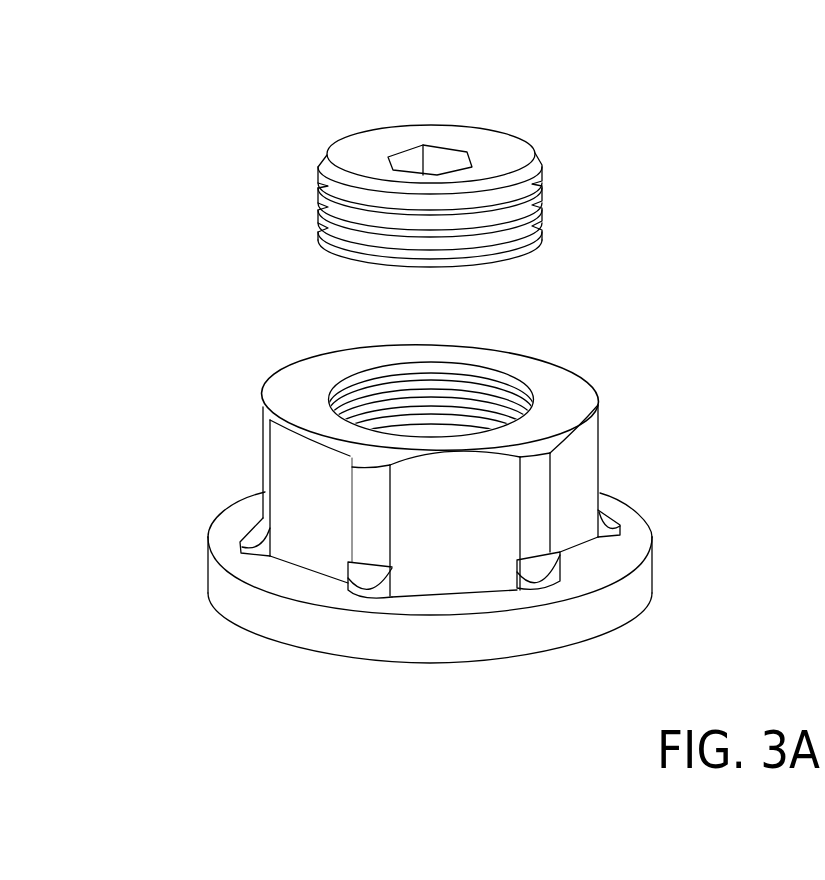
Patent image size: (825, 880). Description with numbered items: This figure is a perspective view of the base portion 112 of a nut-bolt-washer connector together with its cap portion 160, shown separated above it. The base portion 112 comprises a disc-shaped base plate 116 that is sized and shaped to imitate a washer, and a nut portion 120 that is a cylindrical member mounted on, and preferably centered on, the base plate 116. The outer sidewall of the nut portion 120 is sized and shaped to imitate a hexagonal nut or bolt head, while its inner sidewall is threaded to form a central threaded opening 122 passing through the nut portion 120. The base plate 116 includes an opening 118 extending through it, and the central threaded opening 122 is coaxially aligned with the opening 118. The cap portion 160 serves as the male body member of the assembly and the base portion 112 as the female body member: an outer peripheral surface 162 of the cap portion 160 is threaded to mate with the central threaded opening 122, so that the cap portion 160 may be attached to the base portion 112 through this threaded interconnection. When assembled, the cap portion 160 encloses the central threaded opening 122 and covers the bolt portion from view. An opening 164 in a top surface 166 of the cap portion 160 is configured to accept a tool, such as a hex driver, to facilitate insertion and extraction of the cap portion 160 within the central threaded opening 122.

The base portion 112 is at (310, 318).
The base plate 116 is at (237, 563).
The opening 118 is at (493, 406).
The nut portion 120 is at (573, 418).
The central threaded opening 122 is at (322, 399).
The cap portion 160 is at (560, 191).
The outer peripheral surface 162 is at (437, 495).
The opening 164 is at (388, 162).
The top surface 166 is at (465, 135).